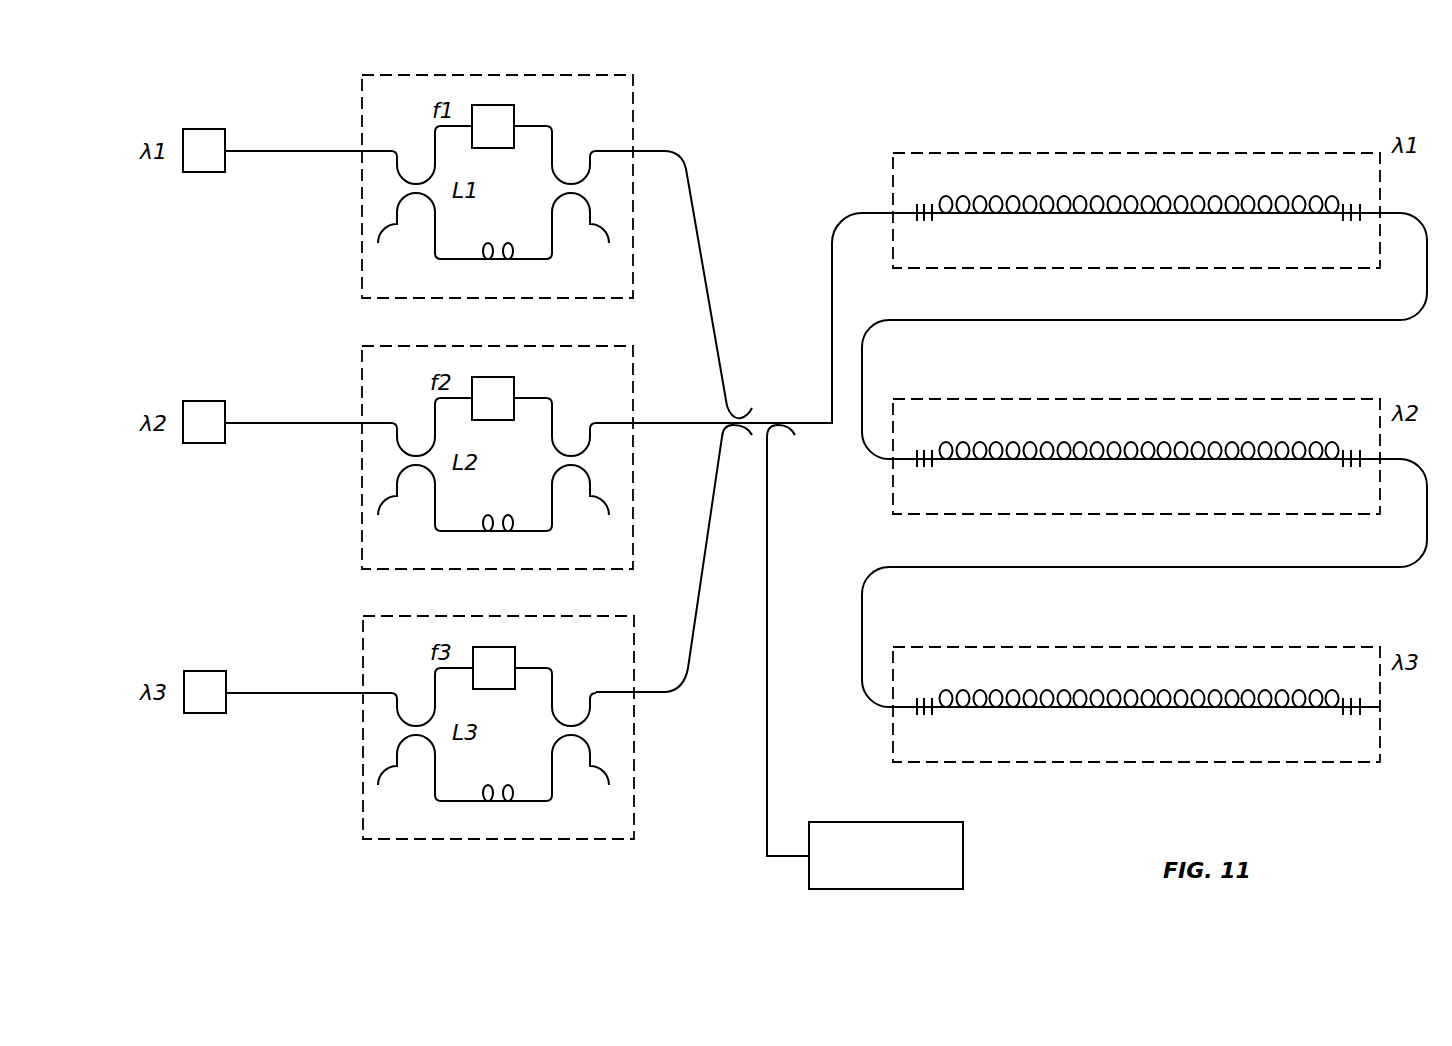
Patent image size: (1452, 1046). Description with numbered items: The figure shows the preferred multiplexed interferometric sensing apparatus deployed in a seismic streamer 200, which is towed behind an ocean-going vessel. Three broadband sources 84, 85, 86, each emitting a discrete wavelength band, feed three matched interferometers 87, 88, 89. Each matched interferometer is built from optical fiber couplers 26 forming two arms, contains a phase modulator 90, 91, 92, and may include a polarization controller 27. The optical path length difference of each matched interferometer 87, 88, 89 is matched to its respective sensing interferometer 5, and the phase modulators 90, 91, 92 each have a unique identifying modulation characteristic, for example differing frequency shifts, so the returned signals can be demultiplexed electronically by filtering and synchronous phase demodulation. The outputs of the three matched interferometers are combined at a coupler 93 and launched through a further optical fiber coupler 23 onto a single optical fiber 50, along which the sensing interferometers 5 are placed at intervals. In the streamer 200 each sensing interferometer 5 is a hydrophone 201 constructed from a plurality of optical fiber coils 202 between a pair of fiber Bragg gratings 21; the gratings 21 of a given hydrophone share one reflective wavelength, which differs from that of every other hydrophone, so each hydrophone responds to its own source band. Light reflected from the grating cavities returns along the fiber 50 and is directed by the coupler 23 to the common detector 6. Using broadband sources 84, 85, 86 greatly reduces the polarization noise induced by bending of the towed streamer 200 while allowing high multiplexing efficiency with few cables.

The broadband source 84 is at (222, 129).
The broadband source 85 is at (222, 401).
The broadband source 86 is at (222, 671).
The matched interferometer 87 is at (633, 117).
The matched interferometer 88 is at (633, 388).
The matched interferometer 89 is at (634, 773).
The phase modulator 90 is at (516, 116).
The phase modulator 91 is at (516, 388).
The phase modulator 92 is at (516, 658).
The optical fiber coupler 26 is at (418, 488).
The polarization controller 27 is at (497, 533).
The combining coupler 93 is at (735, 413).
The optical fiber coupler 23 is at (778, 422).
The detector 6 is at (903, 889).
The optical fiber 50 is at (1413, 218).
The seismic streamer 200 is at (1345, 332).
The sensing interferometer 5 is at (950, 155).
The hydrophone 201 is at (1118, 155).
The optical fiber coil 202 is at (1030, 200).
The optical fiber Bragg grating 21 is at (923, 222).